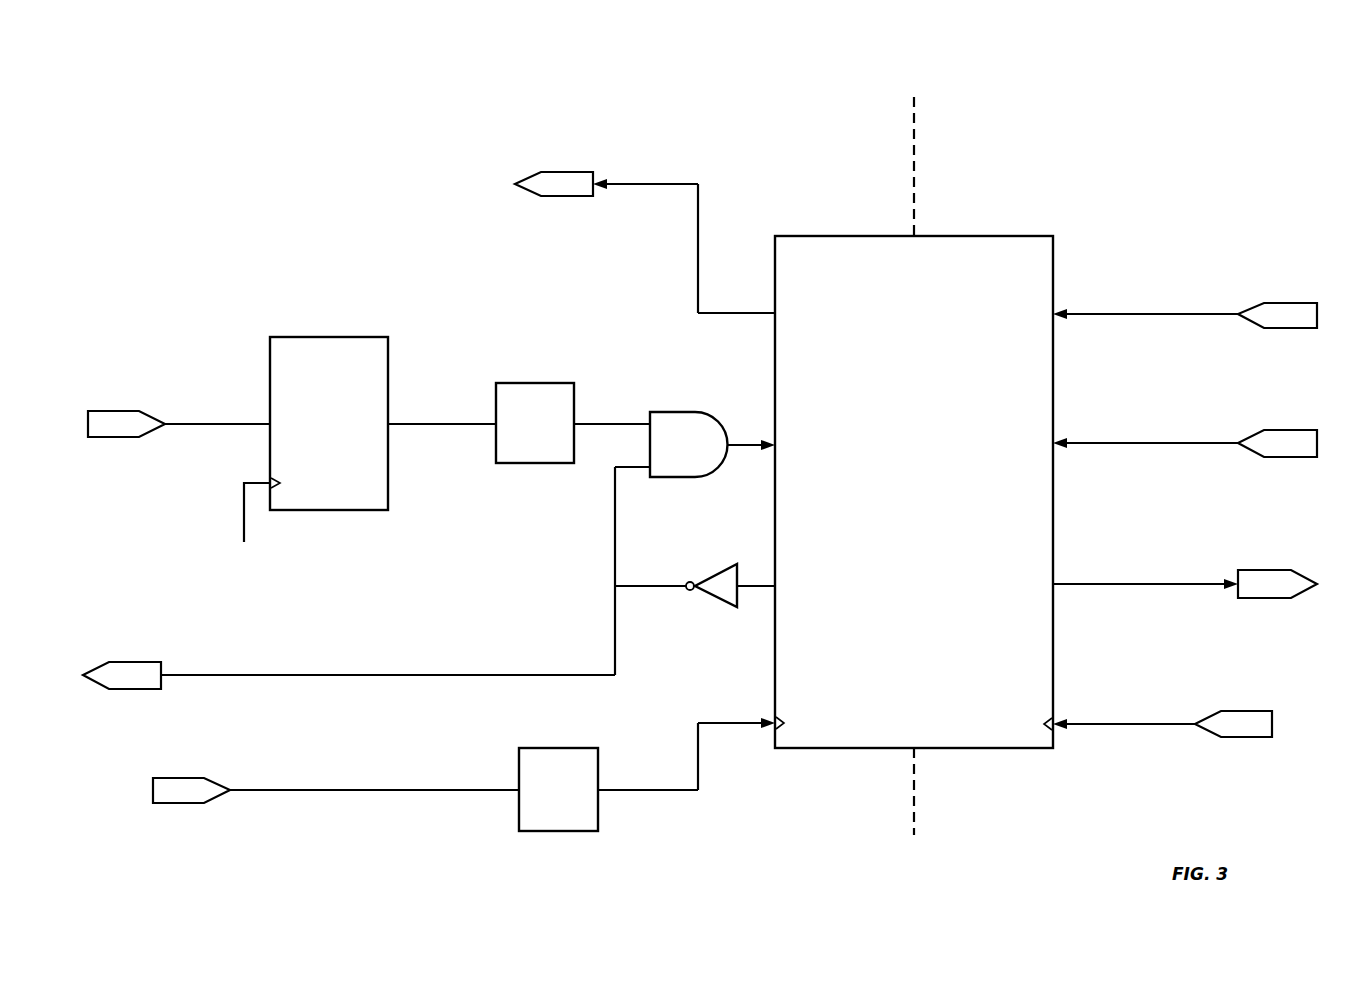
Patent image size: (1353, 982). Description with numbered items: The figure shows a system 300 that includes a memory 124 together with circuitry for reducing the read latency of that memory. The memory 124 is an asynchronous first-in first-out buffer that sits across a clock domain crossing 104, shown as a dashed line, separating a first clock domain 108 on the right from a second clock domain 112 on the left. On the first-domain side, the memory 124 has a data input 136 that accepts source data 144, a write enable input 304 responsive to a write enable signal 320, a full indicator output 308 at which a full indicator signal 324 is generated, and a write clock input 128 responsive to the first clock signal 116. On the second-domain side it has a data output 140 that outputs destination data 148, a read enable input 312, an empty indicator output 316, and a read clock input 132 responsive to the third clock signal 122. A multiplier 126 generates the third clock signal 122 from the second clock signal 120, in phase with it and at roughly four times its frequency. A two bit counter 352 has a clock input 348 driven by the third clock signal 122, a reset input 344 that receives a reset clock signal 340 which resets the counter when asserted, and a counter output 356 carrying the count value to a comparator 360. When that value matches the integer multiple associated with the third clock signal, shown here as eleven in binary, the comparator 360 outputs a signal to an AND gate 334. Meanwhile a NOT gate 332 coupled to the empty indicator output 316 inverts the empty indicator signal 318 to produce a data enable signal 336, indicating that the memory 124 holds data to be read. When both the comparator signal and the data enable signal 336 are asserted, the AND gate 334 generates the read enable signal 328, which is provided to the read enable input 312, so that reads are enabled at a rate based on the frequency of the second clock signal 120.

The system 300 is at (190, 146).
The second clock domain 112 is at (776, 138).
The first clock domain 108 is at (1066, 136).
The clock domain crossing 104 is at (914, 806).
The memory 124 is at (1005, 236).
The data output 140 is at (777, 312).
The read enable input 312 is at (777, 440).
The empty indicator output 316 is at (777, 572).
The read clock input 132 is at (777, 720).
The data input 136 is at (1053, 304).
The write enable input 304 is at (1053, 440).
The full indicator output 308 is at (1053, 580).
The write clock input 128 is at (1053, 709).
The destination data 148 is at (546, 137).
The source data 144 is at (1278, 268).
The write enable signal 320 is at (1273, 404).
The full indicator signal 324 is at (1273, 540).
The first clock signal 116 is at (1238, 686).
The counter 352 is at (356, 510).
The reset input 344 is at (276, 420).
The clock input 348 is at (278, 478).
The counter output 356 is at (388, 420).
The reset clock signal 340 is at (115, 385).
The third clock signal 122 is at (200, 545).
The comparator 360 is at (536, 465).
The AND gate 334 is at (680, 477).
The read enable signal 328 is at (770, 432).
The NOT gate 332 is at (725, 567).
The empty indicator signal 318 is at (750, 588).
The data enable signal 336 is at (127, 625).
The second clock signal 120 is at (190, 745).
The multiplier 126 is at (538, 748).